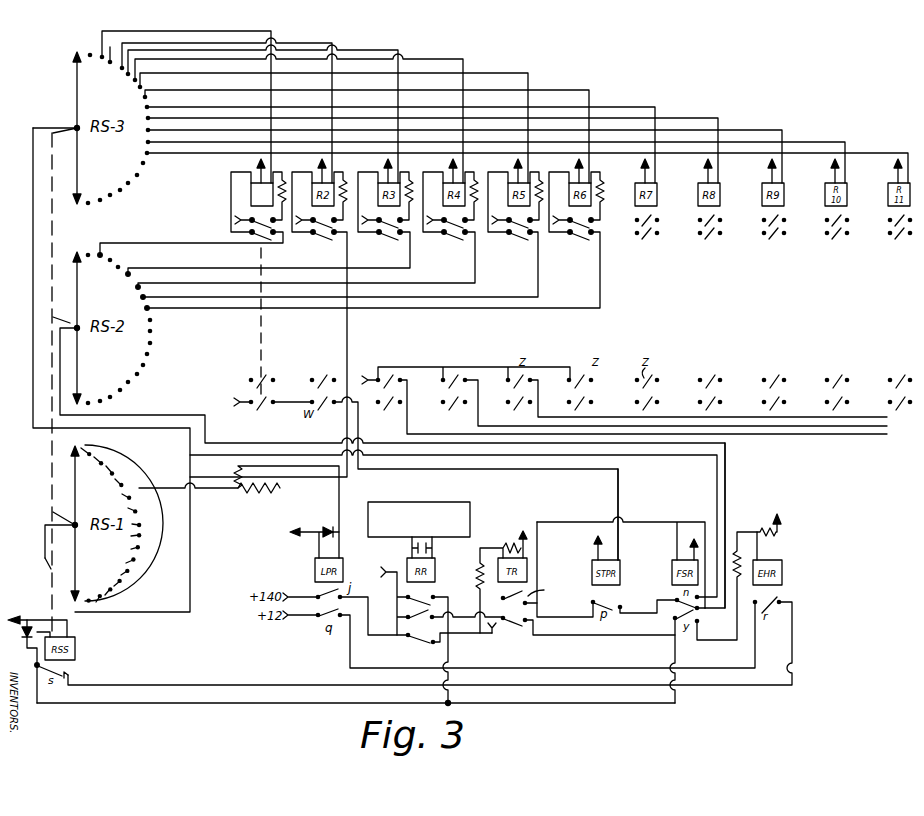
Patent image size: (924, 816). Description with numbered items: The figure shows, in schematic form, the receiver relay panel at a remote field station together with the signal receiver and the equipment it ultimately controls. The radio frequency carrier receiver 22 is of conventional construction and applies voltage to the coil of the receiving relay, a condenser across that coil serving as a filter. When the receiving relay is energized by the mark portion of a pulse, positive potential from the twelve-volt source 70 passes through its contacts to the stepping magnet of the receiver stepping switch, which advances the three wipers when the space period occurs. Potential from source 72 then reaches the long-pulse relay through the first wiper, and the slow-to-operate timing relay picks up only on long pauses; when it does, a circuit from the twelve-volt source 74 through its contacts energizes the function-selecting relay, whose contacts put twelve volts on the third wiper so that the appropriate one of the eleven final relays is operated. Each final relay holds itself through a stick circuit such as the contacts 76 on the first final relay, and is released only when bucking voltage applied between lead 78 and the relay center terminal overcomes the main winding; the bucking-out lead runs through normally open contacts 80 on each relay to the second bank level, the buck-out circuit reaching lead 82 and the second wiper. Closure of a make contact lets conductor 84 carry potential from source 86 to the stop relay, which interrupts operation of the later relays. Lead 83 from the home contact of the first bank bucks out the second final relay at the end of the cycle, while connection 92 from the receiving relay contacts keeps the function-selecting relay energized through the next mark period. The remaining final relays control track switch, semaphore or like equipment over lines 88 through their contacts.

The radio frequency carrier receiver 22 is at (441, 503).
The 12-volt source 70 is at (384, 571).
The source 72 is at (45, 560).
The 12-volt source 74 is at (501, 603).
The stick circuit contacts 76 is at (257, 218).
The lead 78 is at (231, 193).
The normally open contacts 80 is at (263, 240).
The lead 82 is at (726, 498).
The lead 83 is at (347, 337).
The conductor 84 is at (619, 498).
The source 86 is at (236, 398).
The lines 88 is at (797, 436).
The connection 92 is at (612, 705).